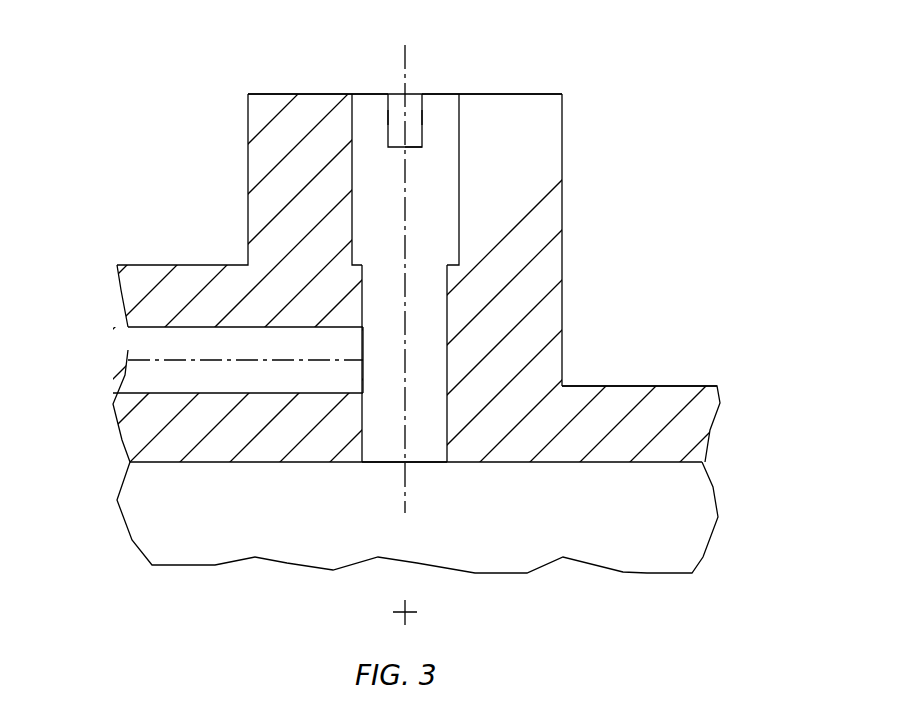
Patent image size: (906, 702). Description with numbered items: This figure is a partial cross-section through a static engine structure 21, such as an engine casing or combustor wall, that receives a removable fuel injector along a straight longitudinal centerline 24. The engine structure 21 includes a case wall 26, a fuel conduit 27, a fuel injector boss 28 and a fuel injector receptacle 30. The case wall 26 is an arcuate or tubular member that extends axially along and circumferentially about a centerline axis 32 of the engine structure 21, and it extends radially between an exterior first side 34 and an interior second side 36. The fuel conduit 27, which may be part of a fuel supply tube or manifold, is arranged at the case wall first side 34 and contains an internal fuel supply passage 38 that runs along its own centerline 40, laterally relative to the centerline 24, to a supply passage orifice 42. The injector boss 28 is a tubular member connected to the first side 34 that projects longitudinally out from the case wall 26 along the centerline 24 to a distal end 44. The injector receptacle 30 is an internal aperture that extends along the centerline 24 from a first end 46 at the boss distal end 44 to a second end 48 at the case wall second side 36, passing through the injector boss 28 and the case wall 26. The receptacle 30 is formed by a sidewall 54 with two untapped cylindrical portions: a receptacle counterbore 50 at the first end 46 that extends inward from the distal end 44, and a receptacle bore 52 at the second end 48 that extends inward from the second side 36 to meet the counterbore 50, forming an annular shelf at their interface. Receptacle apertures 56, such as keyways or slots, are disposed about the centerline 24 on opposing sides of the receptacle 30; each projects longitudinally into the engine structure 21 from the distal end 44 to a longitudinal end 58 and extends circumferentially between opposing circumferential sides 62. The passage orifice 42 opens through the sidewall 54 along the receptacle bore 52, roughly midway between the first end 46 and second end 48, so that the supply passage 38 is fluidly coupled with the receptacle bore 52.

The engine structure 21 is at (213, 90).
The longitudinal centerline 24 is at (405, 502).
The case wall 26 is at (722, 413).
The fuel conduit 27 is at (113, 282).
The fuel injector boss 28 is at (241, 166).
The fuel injector receptacle 30 is at (445, 115).
The centerline axis 32 is at (410, 617).
The first side 34 is at (695, 386).
The second side 36 is at (677, 462).
The internal fuel supply passage 38 is at (147, 341).
The centerline 40 is at (140, 365).
The supply passage orifice 42 is at (366, 353).
The distal end 44 is at (545, 94).
The first end 46 is at (367, 94).
The second end 48 is at (370, 462).
The receptacle counterbore 50 is at (405, 179).
The receptacle bore 52 is at (405, 363).
The sidewall 54 is at (548, 205).
The receptacle aperture 56 is at (413, 103).
The longitudinal end 58 is at (420, 147).
The circumferential sides 62 is at (386, 128).